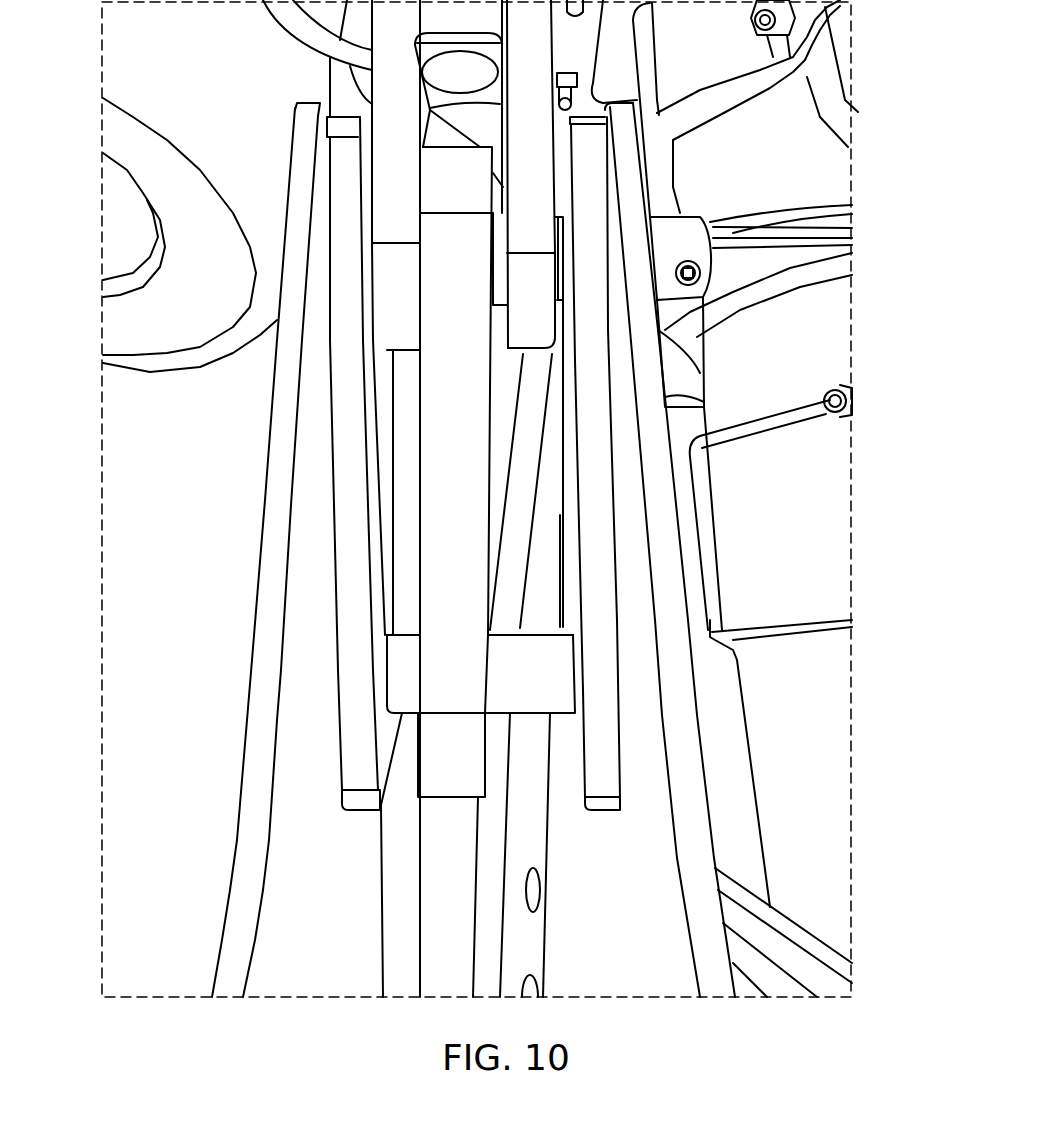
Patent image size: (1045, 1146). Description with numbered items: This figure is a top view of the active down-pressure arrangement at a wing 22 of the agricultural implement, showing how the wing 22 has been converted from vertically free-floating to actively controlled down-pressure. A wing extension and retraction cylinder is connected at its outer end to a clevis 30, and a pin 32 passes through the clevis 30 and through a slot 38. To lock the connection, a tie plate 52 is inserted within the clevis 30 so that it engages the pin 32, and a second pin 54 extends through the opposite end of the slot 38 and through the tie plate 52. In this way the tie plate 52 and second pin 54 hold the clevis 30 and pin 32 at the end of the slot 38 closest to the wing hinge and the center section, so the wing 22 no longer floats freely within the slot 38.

The wing 22 is at (176, 550).
The clevis 30 is at (717, 315).
The pin 32 is at (693, 250).
The slot 38 is at (885, 450).
The tie plate 52 is at (270, 498).
The second pin 54 is at (548, 672).